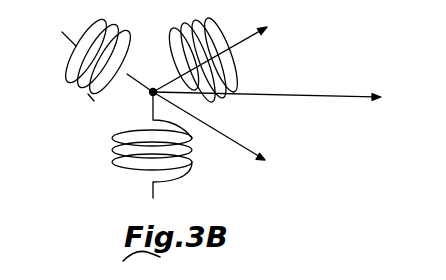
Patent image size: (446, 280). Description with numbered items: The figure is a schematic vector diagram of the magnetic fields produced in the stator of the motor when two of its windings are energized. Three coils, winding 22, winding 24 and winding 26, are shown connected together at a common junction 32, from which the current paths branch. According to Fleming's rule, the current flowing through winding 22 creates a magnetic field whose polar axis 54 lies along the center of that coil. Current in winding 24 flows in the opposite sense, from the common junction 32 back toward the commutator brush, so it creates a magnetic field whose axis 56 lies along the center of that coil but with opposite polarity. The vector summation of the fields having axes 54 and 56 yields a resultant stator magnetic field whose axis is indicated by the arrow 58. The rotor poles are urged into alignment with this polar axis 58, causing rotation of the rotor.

The winding 22 is at (94, 101).
The winding 24 is at (234, 87).
The third coil 26 is at (192, 170).
The common junction 32 is at (154, 88).
The polar axis 54 is at (240, 126).
The axis 56 is at (240, 42).
The axis of the resultant magnetic field 58 is at (286, 94).